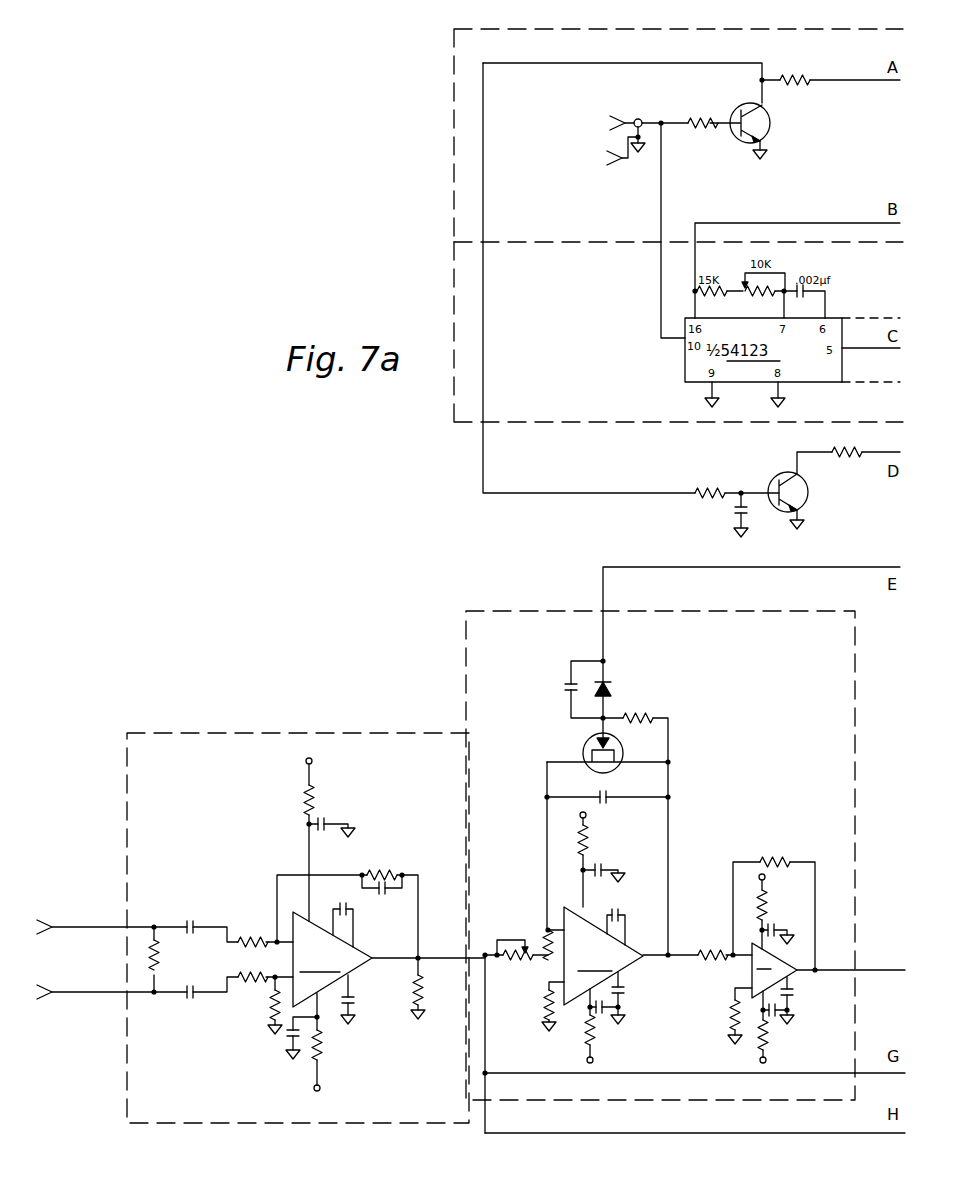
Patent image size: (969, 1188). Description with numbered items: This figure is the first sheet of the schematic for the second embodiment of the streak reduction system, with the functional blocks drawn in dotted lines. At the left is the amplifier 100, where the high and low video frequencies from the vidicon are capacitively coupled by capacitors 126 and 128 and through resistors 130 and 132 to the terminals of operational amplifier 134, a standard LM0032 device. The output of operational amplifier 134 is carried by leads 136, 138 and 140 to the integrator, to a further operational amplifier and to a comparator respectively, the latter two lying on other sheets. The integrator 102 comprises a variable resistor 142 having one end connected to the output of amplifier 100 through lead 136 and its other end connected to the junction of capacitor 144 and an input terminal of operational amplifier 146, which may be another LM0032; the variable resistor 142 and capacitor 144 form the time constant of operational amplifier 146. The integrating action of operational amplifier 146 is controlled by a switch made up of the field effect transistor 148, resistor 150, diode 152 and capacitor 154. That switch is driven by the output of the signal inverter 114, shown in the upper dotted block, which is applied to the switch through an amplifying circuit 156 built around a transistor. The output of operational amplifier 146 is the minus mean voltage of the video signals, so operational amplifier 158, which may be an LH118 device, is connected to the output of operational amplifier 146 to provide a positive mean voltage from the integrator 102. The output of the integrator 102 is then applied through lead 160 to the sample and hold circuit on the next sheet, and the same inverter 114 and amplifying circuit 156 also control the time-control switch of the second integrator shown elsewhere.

The amplifier 100 is at (214, 815).
The integrator 102 is at (525, 727).
The signal inverter 114 is at (720, 56).
The capacitor 126 is at (180, 920).
The capacitor 128 is at (186, 1003).
The resistor 130 is at (235, 914).
The resistor 132 is at (248, 989).
The operational amplifier 134 is at (372, 951).
The lead 136 is at (447, 953).
The lead 138 is at (648, 1134).
The lead 140 is at (662, 1073).
The variable resistor 142 is at (503, 962).
The capacitor 144 is at (610, 800).
The operational amplifier 146 is at (591, 939).
The field effect transistor 148 is at (585, 756).
The resistor 150 is at (656, 713).
The diode 152 is at (610, 683).
The capacitor 154 is at (564, 680).
The amplifying circuit 156 is at (782, 455).
The operational amplifier 158 is at (750, 977).
The lead 160 is at (840, 978).